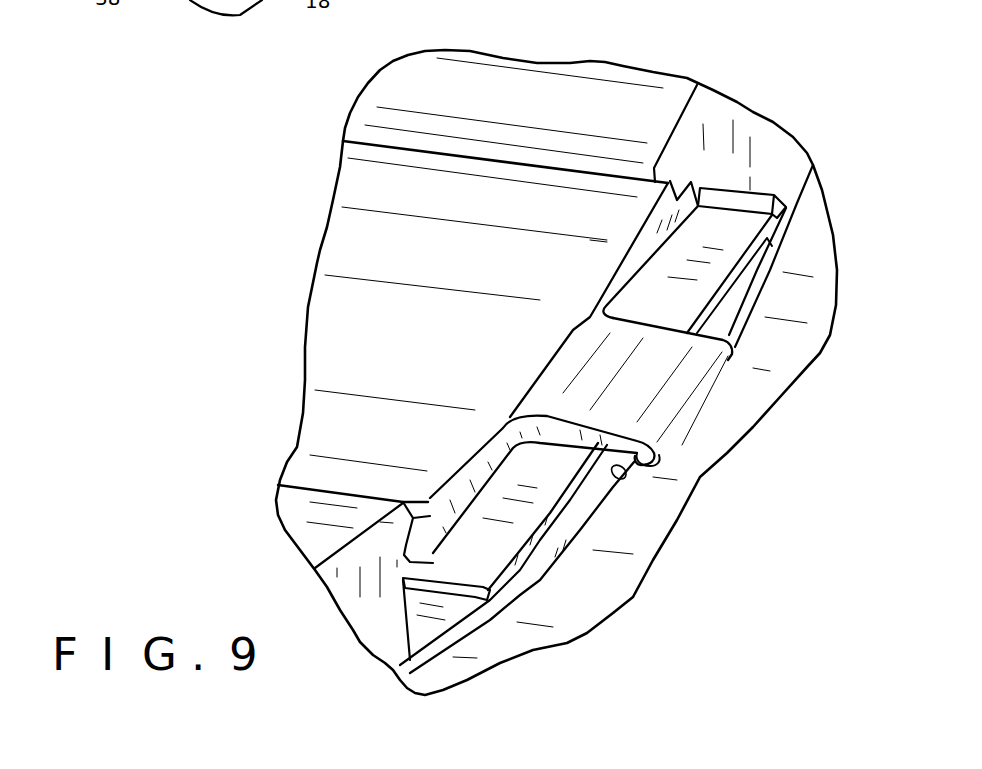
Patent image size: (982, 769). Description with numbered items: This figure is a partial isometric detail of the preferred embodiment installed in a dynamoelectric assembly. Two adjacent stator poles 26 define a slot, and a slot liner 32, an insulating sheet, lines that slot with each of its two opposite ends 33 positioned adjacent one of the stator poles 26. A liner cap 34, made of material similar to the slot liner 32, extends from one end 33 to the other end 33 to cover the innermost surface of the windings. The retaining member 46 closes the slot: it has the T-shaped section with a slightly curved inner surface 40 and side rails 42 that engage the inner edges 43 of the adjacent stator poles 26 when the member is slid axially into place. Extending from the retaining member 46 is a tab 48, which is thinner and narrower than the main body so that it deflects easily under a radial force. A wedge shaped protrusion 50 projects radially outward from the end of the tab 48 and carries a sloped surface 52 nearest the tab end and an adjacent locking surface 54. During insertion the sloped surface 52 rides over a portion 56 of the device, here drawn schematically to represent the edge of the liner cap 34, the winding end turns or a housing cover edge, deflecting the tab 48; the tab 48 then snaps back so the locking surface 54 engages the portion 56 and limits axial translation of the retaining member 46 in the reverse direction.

The stator pole 26 is at (503, 100).
The slot liner 32 is at (353, 633).
The slot liner end 33 is at (753, 197).
The liner cap 34 is at (717, 248).
The inner surface 40 is at (380, 258).
The side rail 42 is at (679, 179).
The inner edge 43 is at (668, 168).
The retaining member 46 is at (384, 349).
The tab 48 is at (617, 400).
The wedge shaped protrusion 50 is at (677, 410).
The sloped surface 52 is at (657, 463).
The locking surface 54 is at (622, 478).
The portion 56 is at (565, 545).